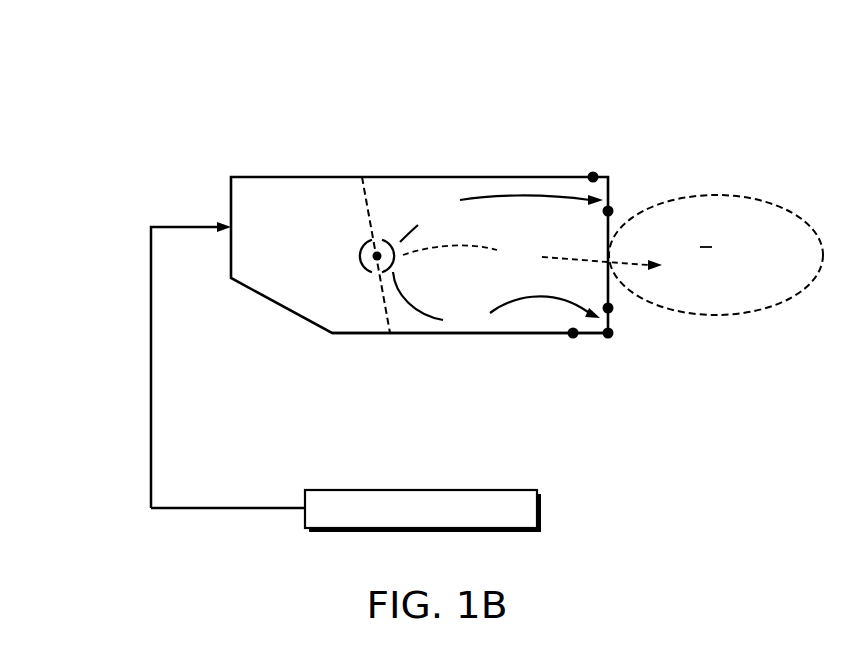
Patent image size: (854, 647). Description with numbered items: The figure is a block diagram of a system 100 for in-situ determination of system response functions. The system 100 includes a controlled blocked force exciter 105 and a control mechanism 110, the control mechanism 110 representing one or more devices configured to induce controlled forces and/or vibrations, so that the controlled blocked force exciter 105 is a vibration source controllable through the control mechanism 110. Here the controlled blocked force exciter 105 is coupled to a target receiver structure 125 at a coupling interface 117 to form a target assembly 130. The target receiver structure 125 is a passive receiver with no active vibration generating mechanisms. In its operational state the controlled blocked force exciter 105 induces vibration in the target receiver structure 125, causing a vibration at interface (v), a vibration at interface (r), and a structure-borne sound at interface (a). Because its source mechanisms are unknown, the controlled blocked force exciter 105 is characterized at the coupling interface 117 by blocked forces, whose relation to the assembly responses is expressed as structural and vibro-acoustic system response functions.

The system 100 is at (103, 196).
The controlled blocked force exciter 105 is at (327, 313).
The control mechanism 110 is at (305, 498).
The coupling interface 117 is at (388, 337).
The target receiver structure 125 is at (521, 322).
The target assembly 130 is at (233, 100).